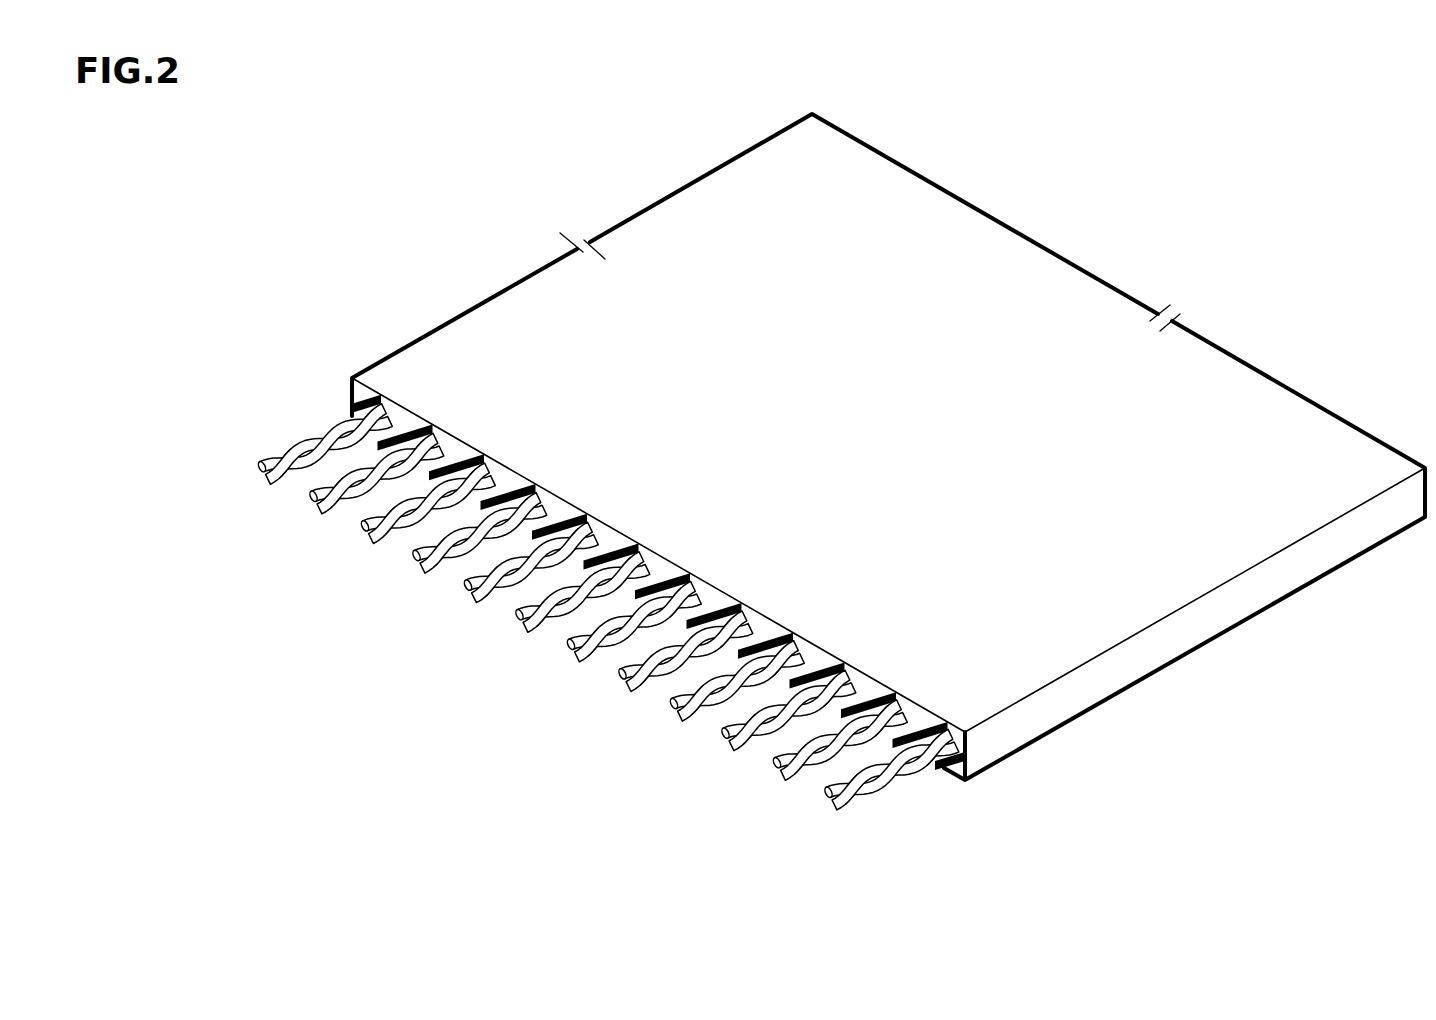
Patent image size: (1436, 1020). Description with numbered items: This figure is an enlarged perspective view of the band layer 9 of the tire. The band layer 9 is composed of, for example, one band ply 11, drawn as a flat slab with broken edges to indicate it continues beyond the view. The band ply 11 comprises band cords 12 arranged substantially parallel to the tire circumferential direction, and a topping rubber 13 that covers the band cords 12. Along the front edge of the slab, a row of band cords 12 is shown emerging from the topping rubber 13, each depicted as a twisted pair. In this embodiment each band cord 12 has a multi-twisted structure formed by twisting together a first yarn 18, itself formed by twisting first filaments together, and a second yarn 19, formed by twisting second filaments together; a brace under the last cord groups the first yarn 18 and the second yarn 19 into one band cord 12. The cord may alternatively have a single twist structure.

The band layer 9 is at (808, 534).
The band ply 11 is at (870, 447).
The band cord 12 is at (575, 679).
The topping rubber 13 is at (718, 223).
The first yarn 18 is at (883, 816).
The second yarn 19 is at (870, 790).